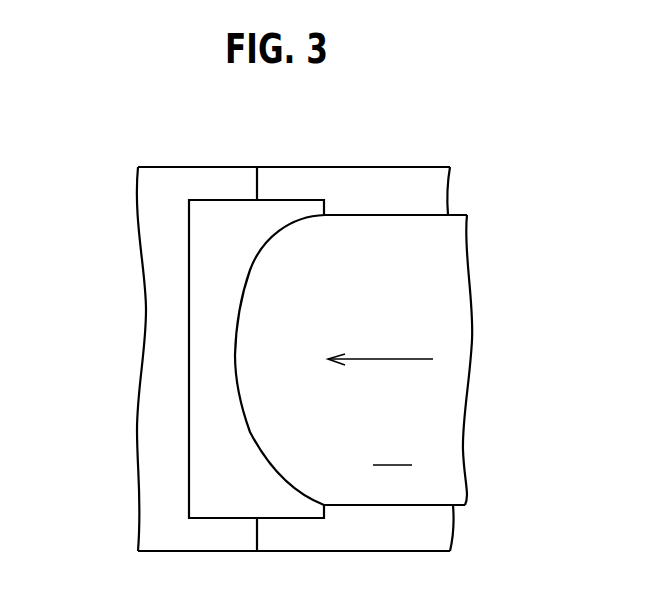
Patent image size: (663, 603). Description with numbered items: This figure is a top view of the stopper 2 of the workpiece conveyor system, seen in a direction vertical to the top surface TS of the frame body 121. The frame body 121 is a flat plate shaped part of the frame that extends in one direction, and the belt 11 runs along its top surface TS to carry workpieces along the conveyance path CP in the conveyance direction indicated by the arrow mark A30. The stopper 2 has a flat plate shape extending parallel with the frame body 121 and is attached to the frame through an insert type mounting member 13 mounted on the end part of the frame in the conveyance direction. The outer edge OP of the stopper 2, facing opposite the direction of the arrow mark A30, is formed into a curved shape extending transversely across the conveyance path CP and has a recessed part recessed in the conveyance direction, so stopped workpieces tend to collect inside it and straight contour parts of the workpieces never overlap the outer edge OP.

The mounting member 13 is at (178, 187).
The frame body 121 is at (342, 187).
The stopper 2 is at (267, 218).
The top surface TS is at (382, 199).
The belt 11 is at (415, 228).
The outer edge OP is at (242, 410).
The arrow mark A30 is at (405, 359).
The conveyance path CP is at (392, 452).